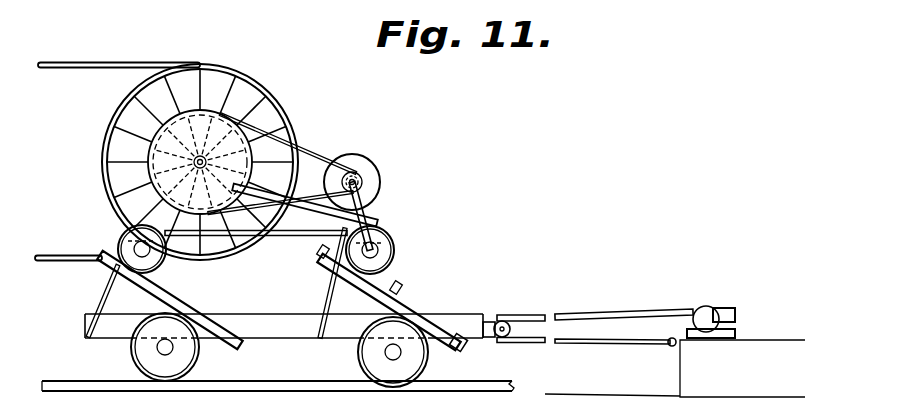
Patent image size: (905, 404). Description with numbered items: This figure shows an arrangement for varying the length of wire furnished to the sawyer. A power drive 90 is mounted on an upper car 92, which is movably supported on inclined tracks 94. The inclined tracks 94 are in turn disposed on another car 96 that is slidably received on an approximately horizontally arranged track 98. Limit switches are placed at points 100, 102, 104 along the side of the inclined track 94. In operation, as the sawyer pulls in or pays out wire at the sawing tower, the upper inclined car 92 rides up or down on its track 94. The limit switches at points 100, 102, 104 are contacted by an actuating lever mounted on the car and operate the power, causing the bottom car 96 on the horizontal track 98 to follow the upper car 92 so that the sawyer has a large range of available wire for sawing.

The power drive 90 is at (378, 179).
The car 92 is at (313, 216).
The inclined tracks 94 is at (172, 300).
The car 96 is at (293, 327).
The horizontally arranged track 98 is at (253, 383).
The limit switch point 100 is at (328, 267).
The limit switch point 102 is at (400, 290).
The limit switch point 104 is at (457, 318).